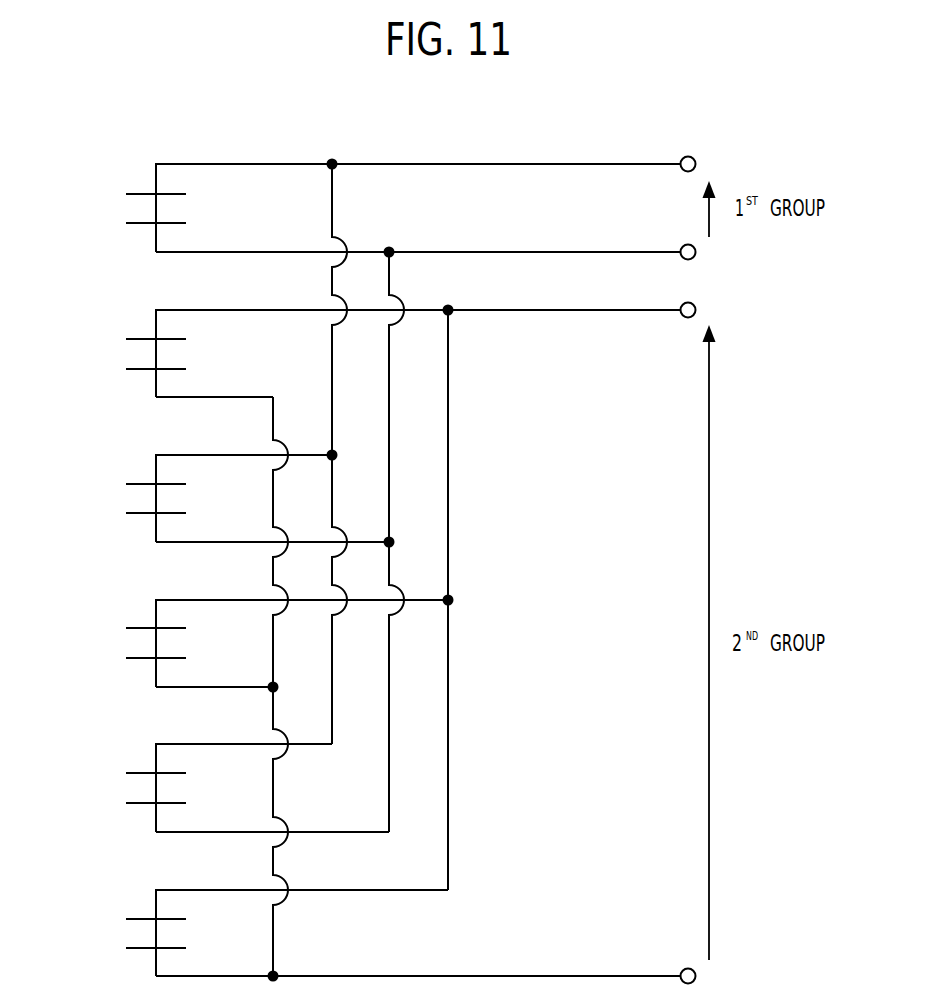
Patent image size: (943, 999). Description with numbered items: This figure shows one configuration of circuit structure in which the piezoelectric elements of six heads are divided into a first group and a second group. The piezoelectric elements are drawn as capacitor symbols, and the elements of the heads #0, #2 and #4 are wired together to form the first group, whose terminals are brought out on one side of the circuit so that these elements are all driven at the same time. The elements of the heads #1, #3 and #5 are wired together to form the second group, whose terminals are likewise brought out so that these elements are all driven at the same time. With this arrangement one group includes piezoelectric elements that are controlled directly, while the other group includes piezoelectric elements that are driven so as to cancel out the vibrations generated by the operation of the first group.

The #0 head piezoelectric element 0 is at (373, 208).
The #1 head piezoelectric element 1 is at (373, 353).
The #2 head piezoelectric element 2 is at (228, 498).
The #3 head piezoelectric element 3 is at (257, 643).
The #4 head piezoelectric element 4 is at (228, 788).
The #5 head piezoelectric element 5 is at (373, 933).